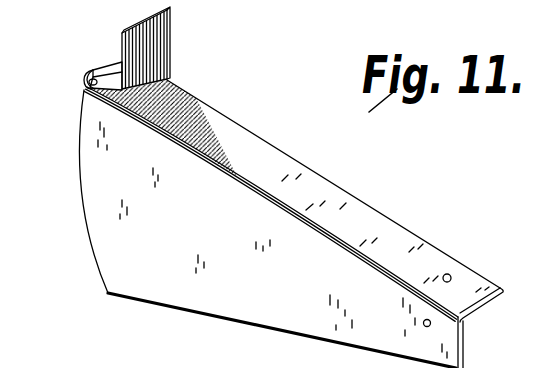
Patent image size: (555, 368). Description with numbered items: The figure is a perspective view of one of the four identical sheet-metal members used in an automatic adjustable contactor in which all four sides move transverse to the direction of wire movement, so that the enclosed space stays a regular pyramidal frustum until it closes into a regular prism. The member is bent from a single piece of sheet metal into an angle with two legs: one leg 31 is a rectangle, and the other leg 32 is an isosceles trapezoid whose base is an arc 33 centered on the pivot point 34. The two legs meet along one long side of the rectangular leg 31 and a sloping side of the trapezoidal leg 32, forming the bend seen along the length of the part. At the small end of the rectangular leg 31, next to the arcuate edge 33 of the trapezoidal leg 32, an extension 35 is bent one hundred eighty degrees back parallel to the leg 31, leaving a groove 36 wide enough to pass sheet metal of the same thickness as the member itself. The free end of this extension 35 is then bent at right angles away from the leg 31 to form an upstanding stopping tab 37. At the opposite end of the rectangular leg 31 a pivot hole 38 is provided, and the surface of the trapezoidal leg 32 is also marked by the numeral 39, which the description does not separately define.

The leg 31 is at (322, 192).
The leg 32 is at (98, 206).
The arc 33 is at (78, 152).
The pivot point 34 is at (431, 325).
The extension 35 is at (112, 73).
The groove 36 is at (90, 80).
The stopping tab 37 is at (148, 43).
The pivot hole 38 is at (450, 275).
The bottom edge 39 is at (140, 258).